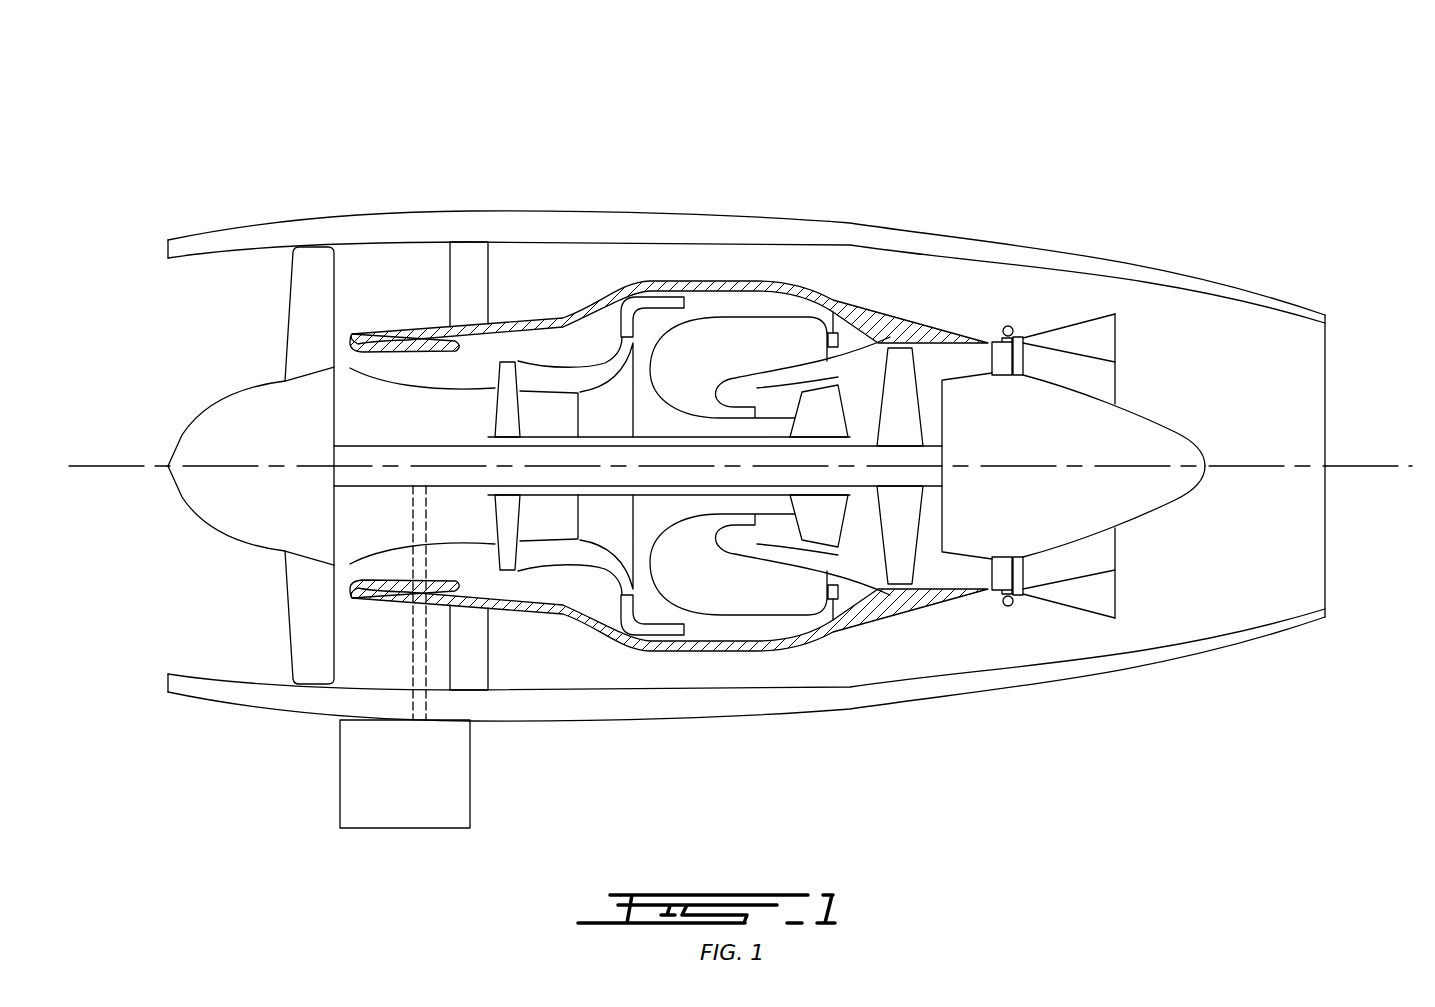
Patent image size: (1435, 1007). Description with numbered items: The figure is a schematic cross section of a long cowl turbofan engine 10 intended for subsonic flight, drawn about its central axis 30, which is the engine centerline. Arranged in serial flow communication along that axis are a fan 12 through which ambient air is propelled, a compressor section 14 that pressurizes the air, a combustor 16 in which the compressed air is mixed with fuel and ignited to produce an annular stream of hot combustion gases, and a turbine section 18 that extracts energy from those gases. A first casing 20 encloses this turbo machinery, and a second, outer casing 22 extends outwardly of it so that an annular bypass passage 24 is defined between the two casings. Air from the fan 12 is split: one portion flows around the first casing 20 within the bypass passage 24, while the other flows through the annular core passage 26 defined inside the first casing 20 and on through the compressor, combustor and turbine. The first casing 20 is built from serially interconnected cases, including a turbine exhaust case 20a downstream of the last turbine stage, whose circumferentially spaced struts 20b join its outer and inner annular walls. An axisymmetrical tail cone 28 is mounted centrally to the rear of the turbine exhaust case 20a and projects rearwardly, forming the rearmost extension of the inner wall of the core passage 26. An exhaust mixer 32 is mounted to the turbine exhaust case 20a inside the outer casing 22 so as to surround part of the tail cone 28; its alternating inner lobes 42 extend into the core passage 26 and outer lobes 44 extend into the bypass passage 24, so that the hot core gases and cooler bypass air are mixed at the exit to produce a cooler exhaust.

The turbofan engine 10 is at (880, 171).
The fan 12 is at (305, 607).
The compressor section 14 is at (562, 382).
The combustor 16 is at (738, 335).
The turbine section 18 is at (860, 527).
The first casing 20 is at (890, 330).
The turbine exhaust case 20a is at (1005, 614).
The struts 20b is at (955, 366).
The outer casing 22 is at (1243, 287).
The bypass passage 24 is at (968, 275).
The core passage 26 is at (423, 368).
The tail cone 28 is at (1123, 432).
The central axis 30 is at (1383, 466).
The exhaust mixer 32 is at (1083, 635).
The inner lobes 42 is at (1083, 577).
The outer lobes 44 is at (1090, 313).